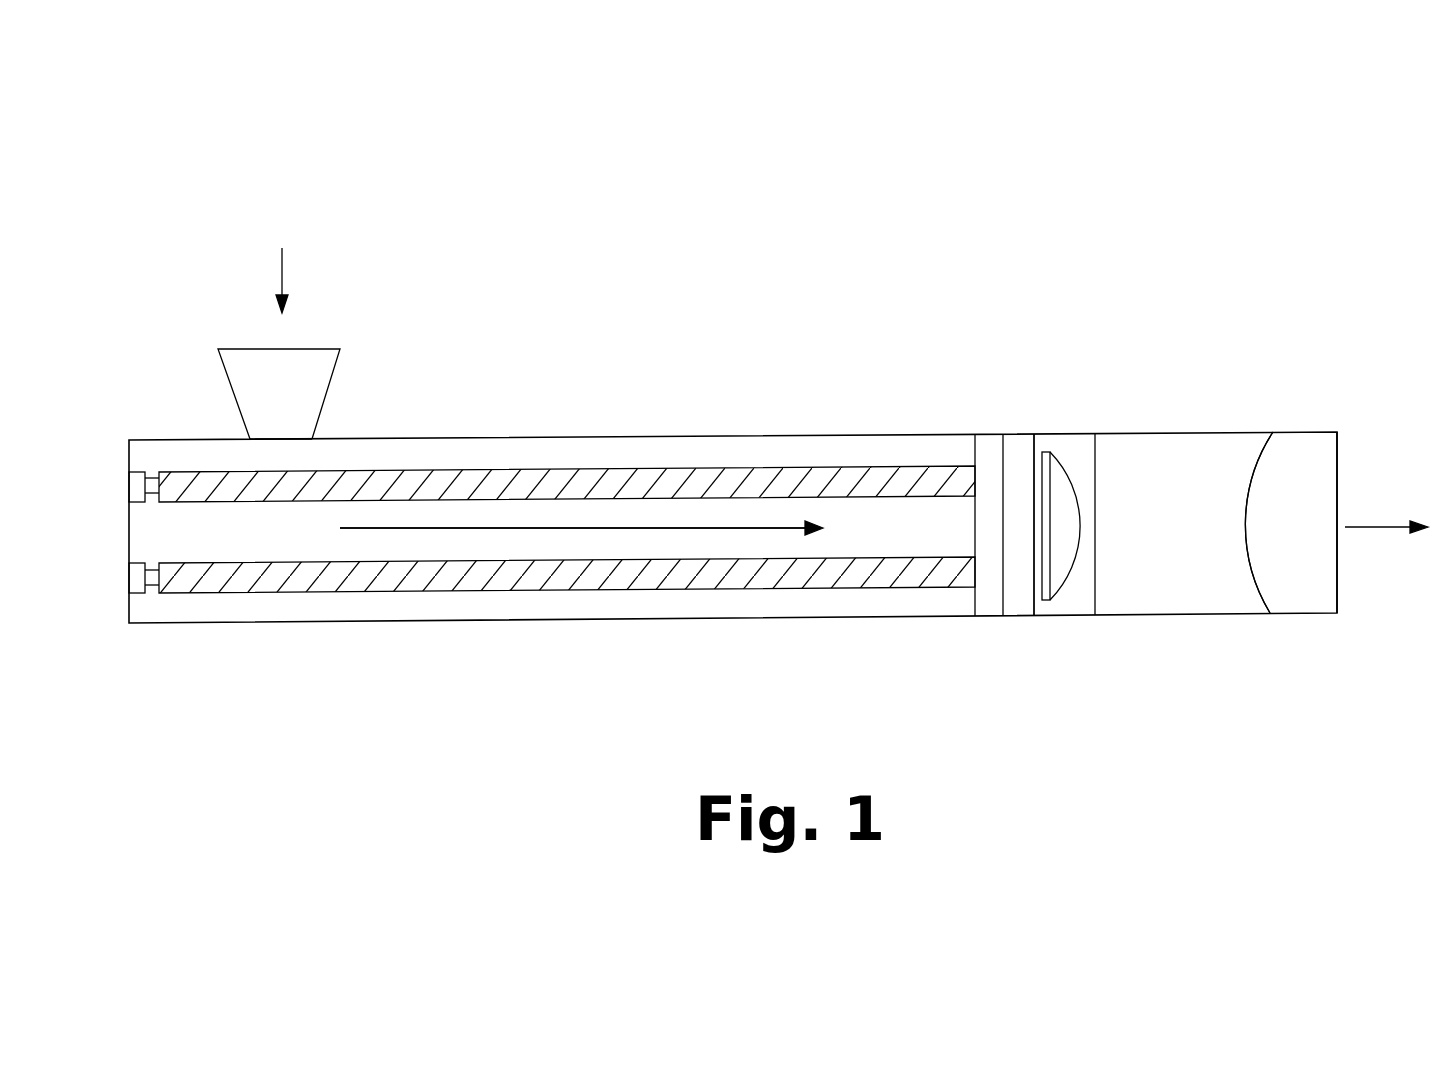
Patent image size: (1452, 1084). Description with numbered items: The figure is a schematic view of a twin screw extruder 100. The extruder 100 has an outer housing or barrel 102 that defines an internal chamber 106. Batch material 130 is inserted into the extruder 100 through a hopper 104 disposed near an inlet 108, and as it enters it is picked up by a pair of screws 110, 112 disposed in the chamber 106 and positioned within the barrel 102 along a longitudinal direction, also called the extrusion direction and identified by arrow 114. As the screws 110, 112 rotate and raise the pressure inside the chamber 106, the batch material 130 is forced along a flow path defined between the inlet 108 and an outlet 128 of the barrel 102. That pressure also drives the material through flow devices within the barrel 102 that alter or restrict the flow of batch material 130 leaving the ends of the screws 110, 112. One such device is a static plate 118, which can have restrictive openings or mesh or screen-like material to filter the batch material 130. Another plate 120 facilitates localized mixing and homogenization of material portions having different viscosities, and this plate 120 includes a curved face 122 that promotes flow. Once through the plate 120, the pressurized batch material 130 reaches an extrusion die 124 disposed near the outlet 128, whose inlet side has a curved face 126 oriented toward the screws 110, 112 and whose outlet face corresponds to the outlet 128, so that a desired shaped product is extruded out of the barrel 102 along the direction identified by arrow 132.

The twin screw extruder 100 is at (932, 310).
The barrel 102 is at (790, 435).
The hopper 104 is at (328, 387).
The internal chamber 106 is at (259, 544).
The inlet 108 is at (268, 445).
The screw 110 is at (612, 467).
The screw 112 is at (280, 593).
The arrow 114 is at (603, 528).
The static plate 118 is at (1022, 597).
The plate 120 is at (1063, 434).
The curved face 122 is at (1090, 568).
The extrusion die 124 is at (1295, 578).
The inlet face 126 is at (1249, 594).
The outlet 128 is at (1352, 473).
The batch material 130 is at (282, 280).
The arrow 132 is at (1377, 530).